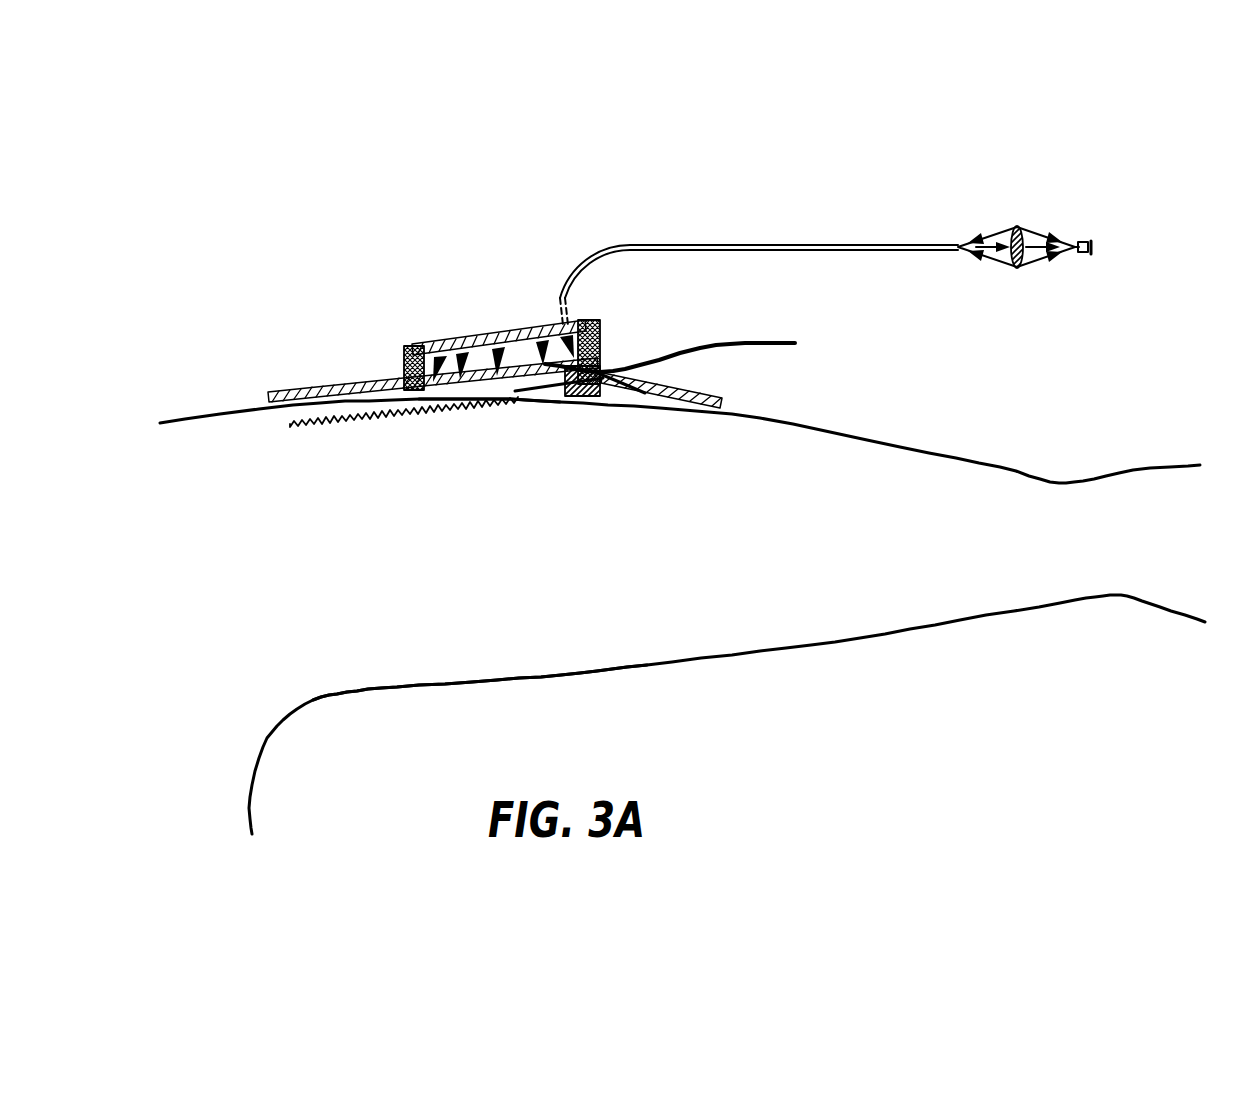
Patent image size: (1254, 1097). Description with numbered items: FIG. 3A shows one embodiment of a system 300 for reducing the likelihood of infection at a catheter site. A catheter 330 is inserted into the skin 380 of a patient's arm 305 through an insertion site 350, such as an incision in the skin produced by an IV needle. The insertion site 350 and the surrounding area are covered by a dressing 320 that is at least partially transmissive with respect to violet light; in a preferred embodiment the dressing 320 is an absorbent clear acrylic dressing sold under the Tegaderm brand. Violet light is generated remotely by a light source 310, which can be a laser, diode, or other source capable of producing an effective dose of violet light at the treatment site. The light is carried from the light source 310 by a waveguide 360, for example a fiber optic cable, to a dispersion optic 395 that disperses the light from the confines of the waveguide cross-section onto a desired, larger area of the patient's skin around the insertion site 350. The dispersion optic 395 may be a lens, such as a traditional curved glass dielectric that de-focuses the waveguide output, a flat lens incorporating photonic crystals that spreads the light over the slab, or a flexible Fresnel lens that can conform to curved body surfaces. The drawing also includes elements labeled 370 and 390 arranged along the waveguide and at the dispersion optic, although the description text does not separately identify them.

The system 300 is at (618, 170).
The arm 305 is at (1081, 442).
The light source 310 is at (1088, 243).
The dressing 320 is at (283, 390).
The catheter 330 is at (767, 347).
The insertion site 350 is at (499, 436).
The waveguide 360 is at (718, 244).
The connector valve 370 is at (1017, 192).
The skin 380 is at (432, 443).
The anchor post 390 is at (417, 347).
The dispersion optic 395 is at (520, 340).